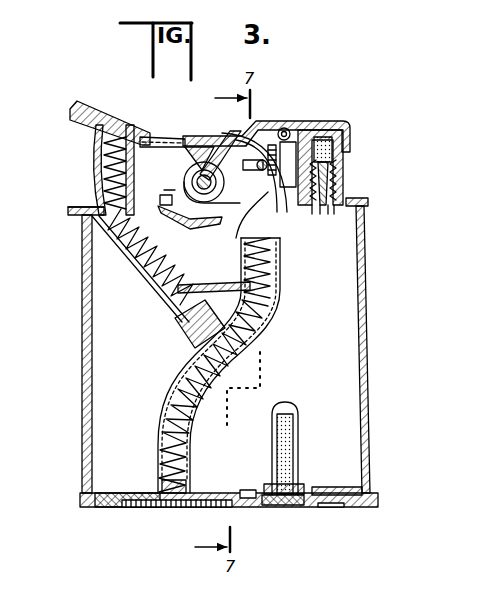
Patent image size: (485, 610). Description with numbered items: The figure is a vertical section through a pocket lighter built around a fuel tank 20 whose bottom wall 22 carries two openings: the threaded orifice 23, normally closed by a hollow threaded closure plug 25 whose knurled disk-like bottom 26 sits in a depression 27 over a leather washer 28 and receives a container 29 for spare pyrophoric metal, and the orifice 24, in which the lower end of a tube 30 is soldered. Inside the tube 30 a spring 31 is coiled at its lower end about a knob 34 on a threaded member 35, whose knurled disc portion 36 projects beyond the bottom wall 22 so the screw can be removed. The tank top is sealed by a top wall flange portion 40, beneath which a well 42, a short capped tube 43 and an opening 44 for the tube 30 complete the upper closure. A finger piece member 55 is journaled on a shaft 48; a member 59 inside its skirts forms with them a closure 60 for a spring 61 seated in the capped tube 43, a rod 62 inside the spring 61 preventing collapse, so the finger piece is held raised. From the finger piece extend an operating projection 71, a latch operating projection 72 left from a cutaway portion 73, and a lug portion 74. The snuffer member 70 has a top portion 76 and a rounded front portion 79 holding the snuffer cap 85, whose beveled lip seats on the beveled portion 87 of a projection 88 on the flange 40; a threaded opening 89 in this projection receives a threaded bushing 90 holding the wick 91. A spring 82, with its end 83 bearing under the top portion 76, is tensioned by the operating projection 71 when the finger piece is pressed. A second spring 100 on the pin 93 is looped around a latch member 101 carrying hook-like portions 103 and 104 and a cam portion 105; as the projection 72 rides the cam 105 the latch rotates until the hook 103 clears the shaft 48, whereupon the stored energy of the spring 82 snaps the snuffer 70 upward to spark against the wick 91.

The fuel tank 20 is at (80, 266).
The bottom wall 22 is at (108, 508).
The orifice 23 is at (318, 492).
The orifice 24 is at (140, 482).
The threaded closure plug 25 is at (270, 488).
The disk-like bottom 26 is at (278, 507).
The depression 27 is at (246, 490).
The leather washer 28 is at (330, 507).
The container 29 is at (296, 410).
The tube 30 is at (174, 376).
The spring 31 is at (162, 406).
The knob 34 is at (188, 470).
The threaded member 35 is at (160, 484).
The knurled disc portion 36 is at (160, 508).
The top wall flange portion 40 is at (82, 204).
The well 42 is at (214, 295).
The capped tube 43 is at (172, 334).
The opening 44 is at (280, 294).
The shaft 48 is at (258, 160).
The finger piece member 55 is at (106, 106).
The member 59 is at (132, 180).
The closure 60 is at (96, 170).
The spring 61 is at (162, 262).
The rod 62 is at (142, 308).
The snuffer member 70 is at (342, 120).
The operating projection 71 is at (162, 139).
The latch operating projection 72 is at (166, 200).
The cutaway portion 73 is at (157, 203).
The lug portion 74 is at (242, 132).
The top portion 76 is at (192, 136).
The front portion 79 is at (348, 140).
The spring 82 is at (205, 162).
The end 83 is at (276, 198).
The snuffer cap 85 is at (346, 160).
The beveled portion 87 is at (346, 176).
The projection 88 is at (368, 201).
The threaded opening 89 is at (346, 188).
The threaded bushing 90 is at (314, 214).
The wick 91 is at (326, 216).
The pin 93 is at (284, 128).
The second spring 100 is at (290, 178).
The latch member 101 is at (208, 253).
The hook-like portion 103 is at (262, 190).
The hook-like portion 104 is at (245, 220).
The cam portion 105 is at (188, 223).